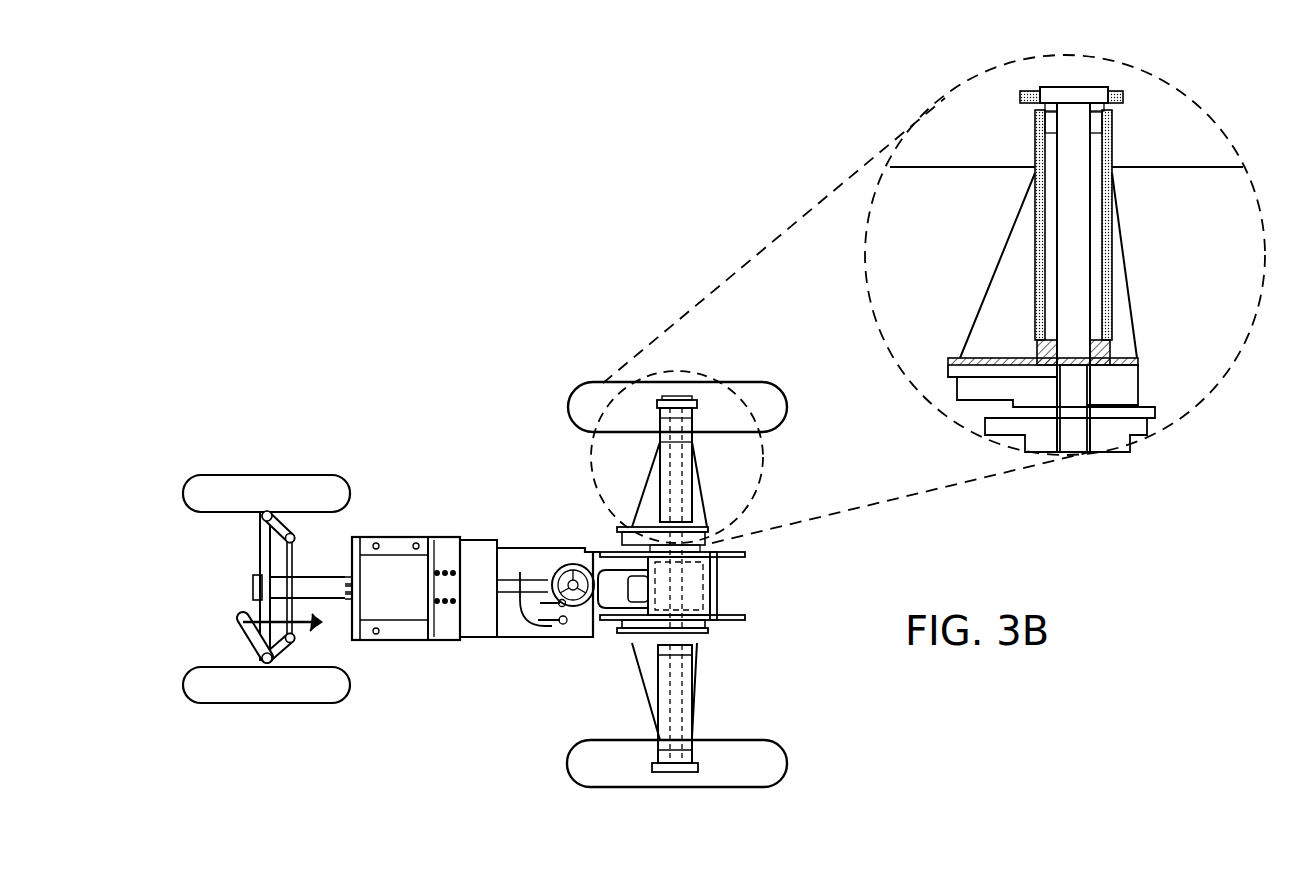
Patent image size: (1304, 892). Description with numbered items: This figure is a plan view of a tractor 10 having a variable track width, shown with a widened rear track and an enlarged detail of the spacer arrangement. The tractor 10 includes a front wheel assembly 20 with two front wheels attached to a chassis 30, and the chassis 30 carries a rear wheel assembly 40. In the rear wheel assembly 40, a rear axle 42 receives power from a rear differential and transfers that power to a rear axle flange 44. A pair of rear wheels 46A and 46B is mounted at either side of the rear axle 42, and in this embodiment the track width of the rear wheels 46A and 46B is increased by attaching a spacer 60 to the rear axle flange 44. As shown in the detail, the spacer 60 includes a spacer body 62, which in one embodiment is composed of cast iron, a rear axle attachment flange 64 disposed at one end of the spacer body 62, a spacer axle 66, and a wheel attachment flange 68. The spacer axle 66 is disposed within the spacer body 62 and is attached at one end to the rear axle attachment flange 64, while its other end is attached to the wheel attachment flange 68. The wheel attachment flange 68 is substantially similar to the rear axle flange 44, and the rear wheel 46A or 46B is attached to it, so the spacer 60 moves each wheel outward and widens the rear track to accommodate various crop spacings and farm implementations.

The tractor 10 is at (485, 584).
The front wheel assembly 20 is at (266, 546).
The chassis 30 is at (410, 645).
The rear wheel assembly 40 is at (718, 580).
The rear axle 42 is at (1073, 392).
The rear axle flange 44 is at (1125, 360).
The rear wheel 46A is at (603, 395).
The rear wheel 46B is at (614, 770).
The spacer 60 is at (1066, 269).
The spacer body 62 is at (1036, 290).
The rear axle attachment flange 64 is at (1040, 345).
The spacer axle 66 is at (1080, 229).
The wheel attachment flange 68 is at (1098, 100).